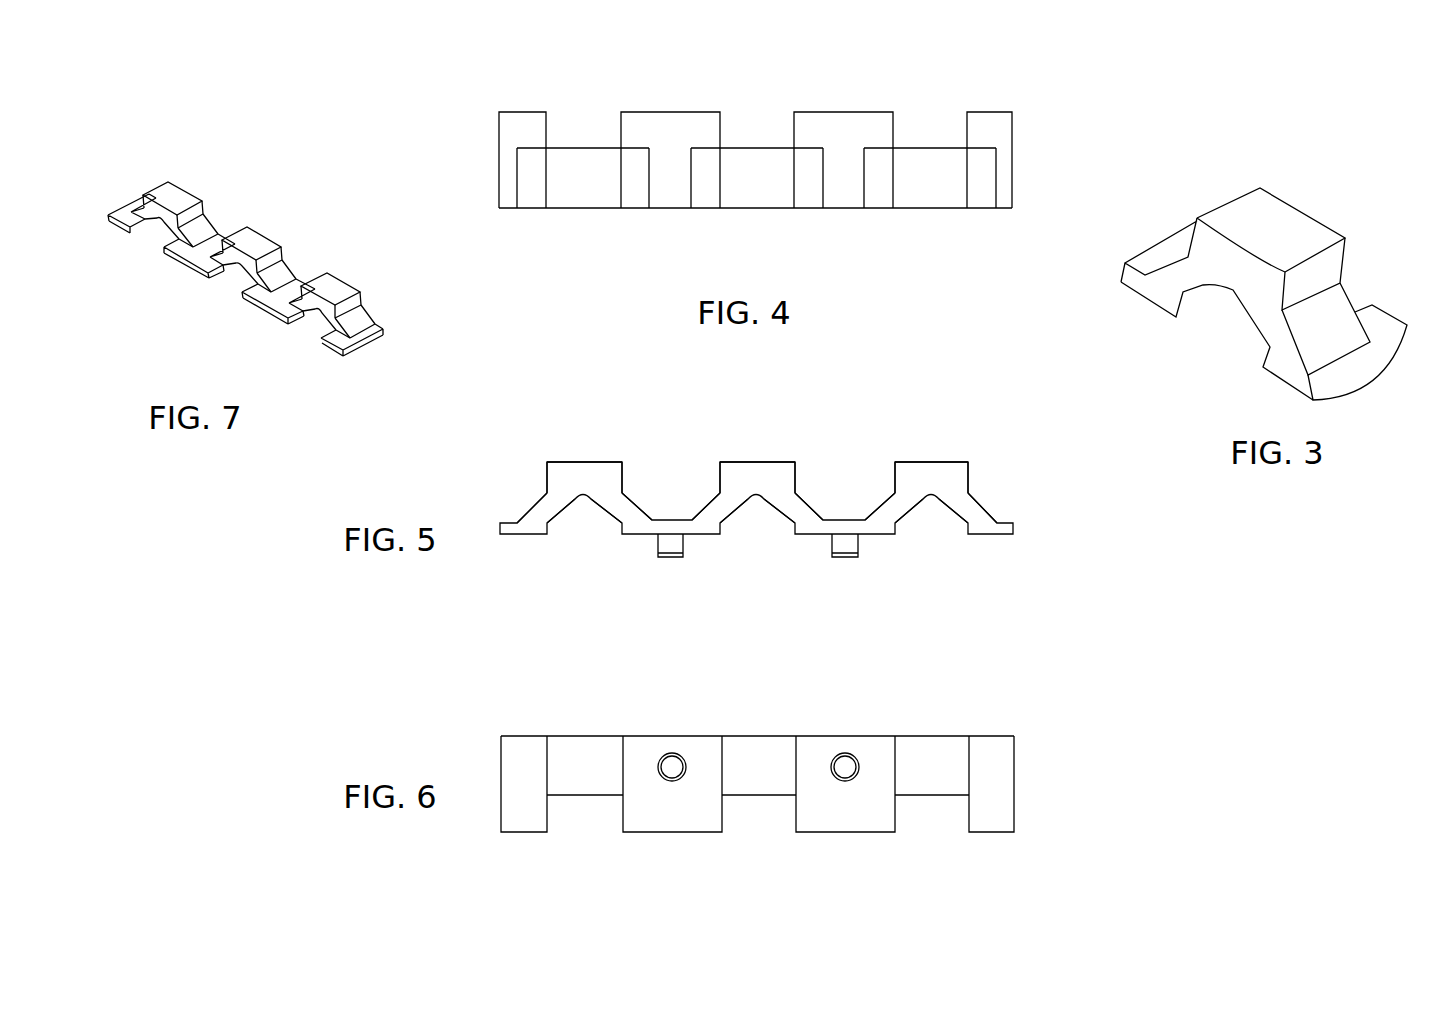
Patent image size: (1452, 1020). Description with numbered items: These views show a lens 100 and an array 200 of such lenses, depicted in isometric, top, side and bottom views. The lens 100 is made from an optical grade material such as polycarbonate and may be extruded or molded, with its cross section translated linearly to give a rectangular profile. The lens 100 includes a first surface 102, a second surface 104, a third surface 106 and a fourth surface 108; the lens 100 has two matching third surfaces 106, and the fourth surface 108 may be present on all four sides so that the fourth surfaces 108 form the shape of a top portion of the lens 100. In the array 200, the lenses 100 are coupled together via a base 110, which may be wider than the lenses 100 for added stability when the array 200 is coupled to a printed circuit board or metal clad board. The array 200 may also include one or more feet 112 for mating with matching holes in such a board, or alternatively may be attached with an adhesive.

In FIG. 4, the lens 100 is at (580, 210).
In FIG. 5, the lens 100 is at (598, 460).
In FIG. 3, the lens 100 is at (1277, 200).
In FIG. 7, the lens 100 is at (187, 185).
In FIG. 5, the first surface 102 is at (583, 497).
In FIG. 6, the first surface 102 is at (595, 748).
In FIG. 3, the first surface 102 is at (1207, 290).
In FIG. 4, the second surface 104 is at (588, 165).
In FIG. 5, the second surface 104 is at (563, 460).
In FIG. 3, the second surface 104 is at (1293, 233).
In FIG. 7, the second surface 104 is at (172, 195).
In FIG. 4, the third surface 106 is at (707, 160).
In FIG. 5, the third surface 106 is at (537, 505).
In FIG. 3, the third surface 106 is at (1333, 317).
In FIG. 7, the third surface 106 is at (160, 245).
In FIG. 5, the fourth surface 108 is at (545, 473).
In FIG. 3, the fourth surface 108 is at (1333, 267).
In FIG. 7, the fourth surface 108 is at (170, 220).
In FIG. 4, the base 110 is at (521, 110).
In FIG. 6, the base 110 is at (528, 825).
In FIG. 3, the base 110 is at (1387, 333).
In FIG. 7, the base 110 is at (208, 228).
In FIG. 5, the feet 112 is at (670, 558).
In FIG. 6, the feet 112 is at (670, 765).
In FIG. 4, the array 200 is at (925, 38).
In FIG. 7, the array 200 is at (322, 138).